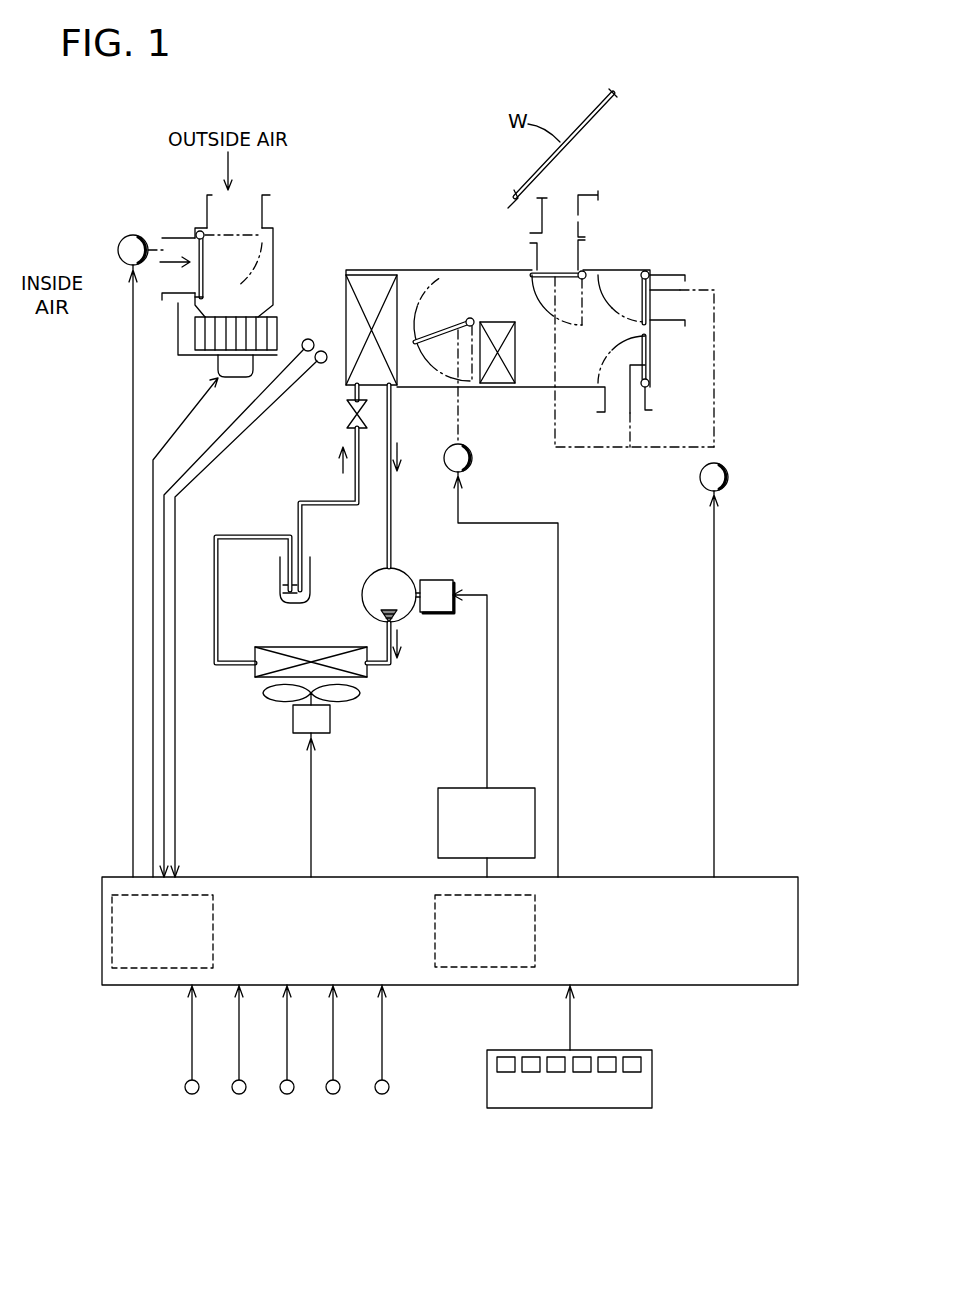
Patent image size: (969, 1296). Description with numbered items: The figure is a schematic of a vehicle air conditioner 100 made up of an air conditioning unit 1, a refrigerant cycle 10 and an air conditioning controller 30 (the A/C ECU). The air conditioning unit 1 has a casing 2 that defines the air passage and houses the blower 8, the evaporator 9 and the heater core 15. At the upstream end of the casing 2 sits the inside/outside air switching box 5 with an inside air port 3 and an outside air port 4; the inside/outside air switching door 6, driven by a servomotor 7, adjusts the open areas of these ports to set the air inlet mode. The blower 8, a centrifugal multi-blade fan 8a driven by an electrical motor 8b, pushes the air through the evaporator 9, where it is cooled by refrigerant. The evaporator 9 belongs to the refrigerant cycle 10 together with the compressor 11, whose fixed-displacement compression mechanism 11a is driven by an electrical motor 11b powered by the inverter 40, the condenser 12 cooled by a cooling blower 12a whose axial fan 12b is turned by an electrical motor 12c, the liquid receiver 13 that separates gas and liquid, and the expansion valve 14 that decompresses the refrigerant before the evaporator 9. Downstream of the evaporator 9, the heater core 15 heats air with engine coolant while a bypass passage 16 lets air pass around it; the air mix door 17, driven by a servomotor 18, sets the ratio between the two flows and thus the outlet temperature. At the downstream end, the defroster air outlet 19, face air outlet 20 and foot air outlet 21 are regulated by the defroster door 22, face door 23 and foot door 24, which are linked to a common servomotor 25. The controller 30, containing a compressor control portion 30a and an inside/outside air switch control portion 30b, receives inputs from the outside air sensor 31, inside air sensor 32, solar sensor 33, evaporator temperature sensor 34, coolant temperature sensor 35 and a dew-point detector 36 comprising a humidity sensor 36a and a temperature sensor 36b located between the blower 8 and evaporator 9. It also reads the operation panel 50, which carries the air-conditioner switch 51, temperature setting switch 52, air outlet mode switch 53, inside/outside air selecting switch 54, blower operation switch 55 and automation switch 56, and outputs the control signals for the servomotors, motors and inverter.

The air conditioning unit 1 is at (444, 256).
The casing 2 is at (465, 270).
The inside air port 3 is at (163, 267).
The outside air port 4 is at (243, 196).
The inside/outside air switching box 5 is at (286, 241).
The inside/outside air switching door 6 is at (204, 274).
The servomotor 7 is at (133, 236).
The blower 8 is at (163, 338).
The centrifugal multi-blade fan 8a is at (200, 341).
The electrical motor 8b is at (232, 380).
The evaporator 9 is at (372, 293).
The refrigerant cycle 10 is at (285, 511).
The compressor 11 is at (409, 620).
The fixed-displacement compression mechanism 11a is at (405, 575).
The electrical motor 11b is at (447, 613).
The condenser 12 is at (282, 648).
The cooling blower 12a is at (258, 716).
The axial fan 12b is at (263, 694).
The electrical motor 12c is at (296, 734).
The liquid receiver 13 is at (281, 571).
The expansion valve 14 is at (343, 412).
The heater core 15 is at (517, 357).
The bypass passage 16 is at (494, 292).
The air mix door 17 is at (433, 345).
The servomotor 18 is at (473, 459).
The defroster air outlet 19 is at (557, 260).
The face air outlet 20 is at (663, 315).
The foot air outlet 21 is at (620, 415).
The defroster door 22 is at (558, 245).
The face door 23 is at (655, 294).
The foot door 24 is at (650, 360).
The servomotor 25 is at (730, 490).
The air conditioning controller 30 is at (779, 877).
The compressor control portion 30a is at (535, 922).
The inside/outside air switch control portion 30b is at (112, 920).
The outside air sensor 31 is at (190, 1094).
The inside air sensor 32 is at (237, 1094).
The solar sensor 33 is at (285, 1094).
The evaporator temperature sensor 34 is at (331, 1094).
The coolant temperature sensor 35 is at (380, 1094).
The dew-point detector 36 is at (410, 152).
The humidity sensor 36a is at (309, 338).
The temperature sensor 36b is at (321, 350).
The inverter 40 is at (438, 825).
The operation panel 50 is at (571, 1108).
The air-conditioner switch 51 is at (505, 1060).
The temperature setting switch 52 is at (528, 1060).
The air outlet mode switch 53 is at (556, 1060).
The inside/outside air selecting switch 54 is at (580, 1060).
The blower operation switch 55 is at (606, 1060).
The automation switch 56 is at (632, 1060).
The air conditioner 100 is at (706, 216).